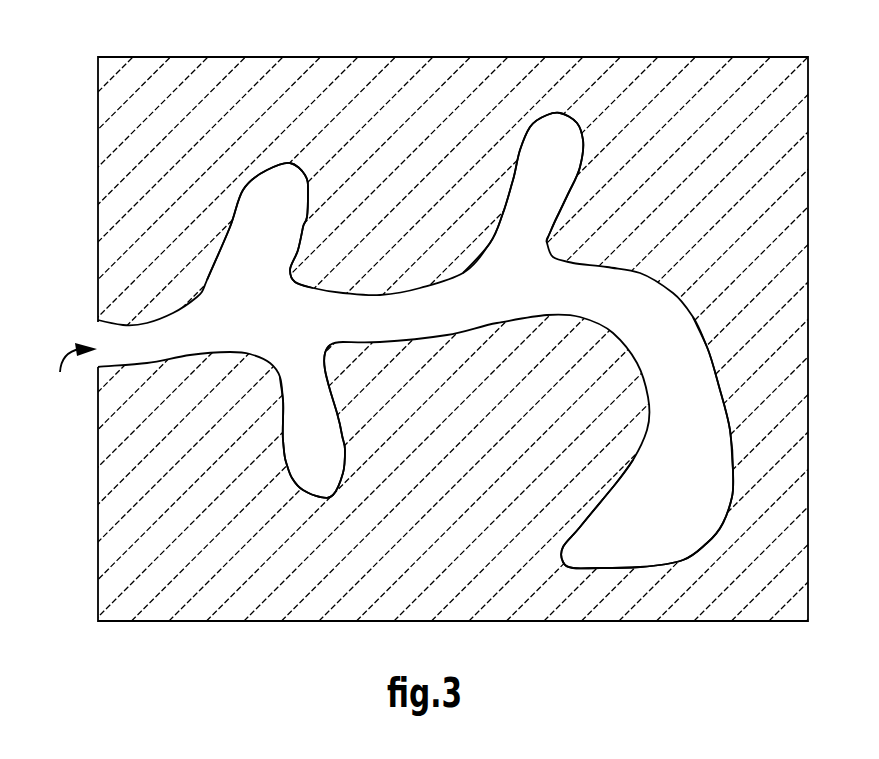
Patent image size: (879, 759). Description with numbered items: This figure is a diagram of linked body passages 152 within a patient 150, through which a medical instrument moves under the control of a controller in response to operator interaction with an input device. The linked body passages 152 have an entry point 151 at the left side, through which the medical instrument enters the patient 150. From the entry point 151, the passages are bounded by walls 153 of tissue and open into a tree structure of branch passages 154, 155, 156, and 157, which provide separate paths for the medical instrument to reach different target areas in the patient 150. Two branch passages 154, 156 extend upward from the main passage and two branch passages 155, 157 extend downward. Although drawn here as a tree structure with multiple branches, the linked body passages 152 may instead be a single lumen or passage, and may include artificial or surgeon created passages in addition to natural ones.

The patient 150 is at (197, 126).
The entry point 151 is at (63, 375).
The linked body passages 152 is at (362, 328).
The walls 153 is at (723, 420).
The branch passage 154 is at (297, 226).
The branch passage 155 is at (334, 454).
The branch passage 156 is at (569, 174).
The branch passage 157 is at (660, 540).